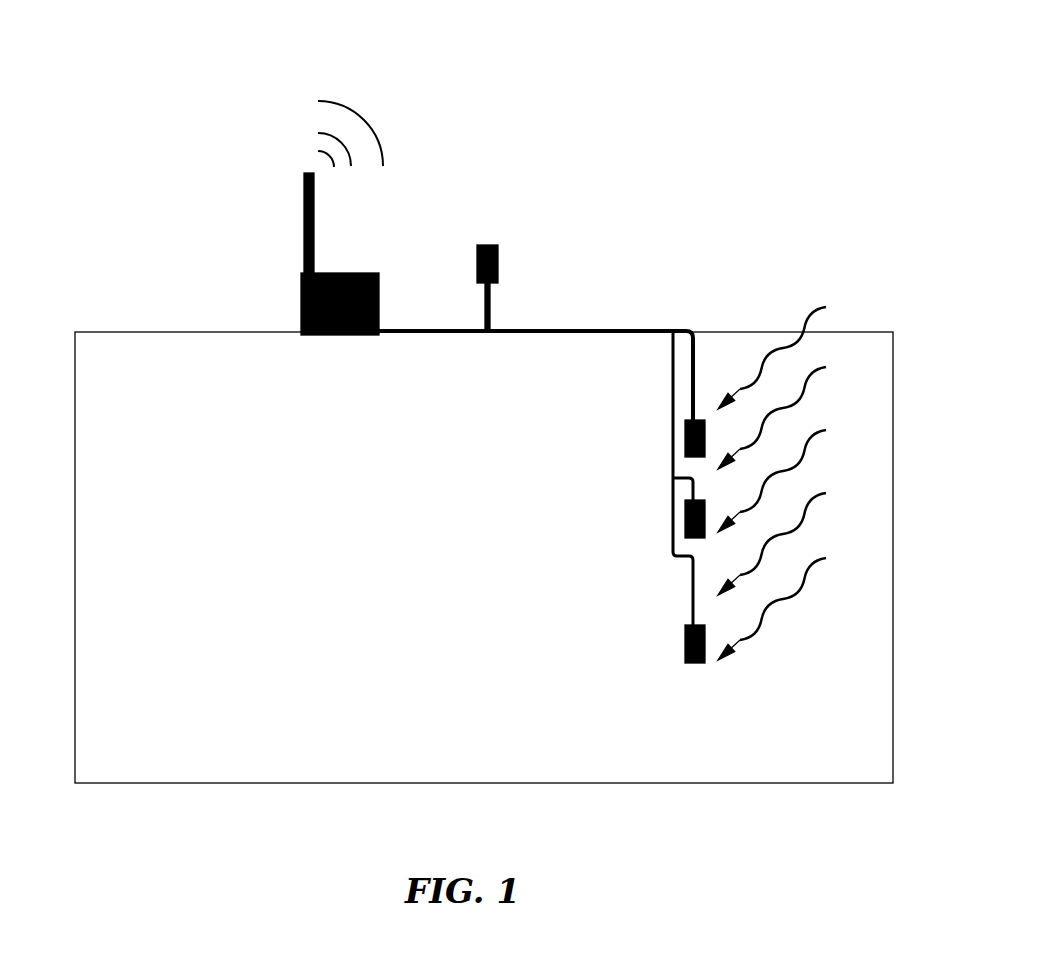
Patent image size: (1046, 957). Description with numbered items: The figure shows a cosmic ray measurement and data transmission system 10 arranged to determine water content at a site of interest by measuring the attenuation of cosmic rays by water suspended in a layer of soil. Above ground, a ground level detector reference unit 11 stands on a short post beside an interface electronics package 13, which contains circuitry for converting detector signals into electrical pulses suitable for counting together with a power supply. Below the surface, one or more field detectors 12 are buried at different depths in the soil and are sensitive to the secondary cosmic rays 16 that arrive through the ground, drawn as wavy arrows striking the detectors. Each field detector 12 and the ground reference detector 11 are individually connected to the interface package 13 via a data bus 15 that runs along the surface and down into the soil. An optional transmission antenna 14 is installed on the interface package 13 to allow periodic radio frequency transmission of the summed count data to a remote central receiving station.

The cosmic ray measurement and data transmission system 10 is at (620, 91).
The ground level detector reference unit 11 is at (520, 237).
The field detectors 12 is at (707, 402).
The interface electronics package 13 is at (381, 255).
The transmission antenna 14 is at (294, 161).
The data bus 15 is at (608, 314).
The secondary cosmic rays 16 is at (789, 468).
The element soil is at (197, 430).